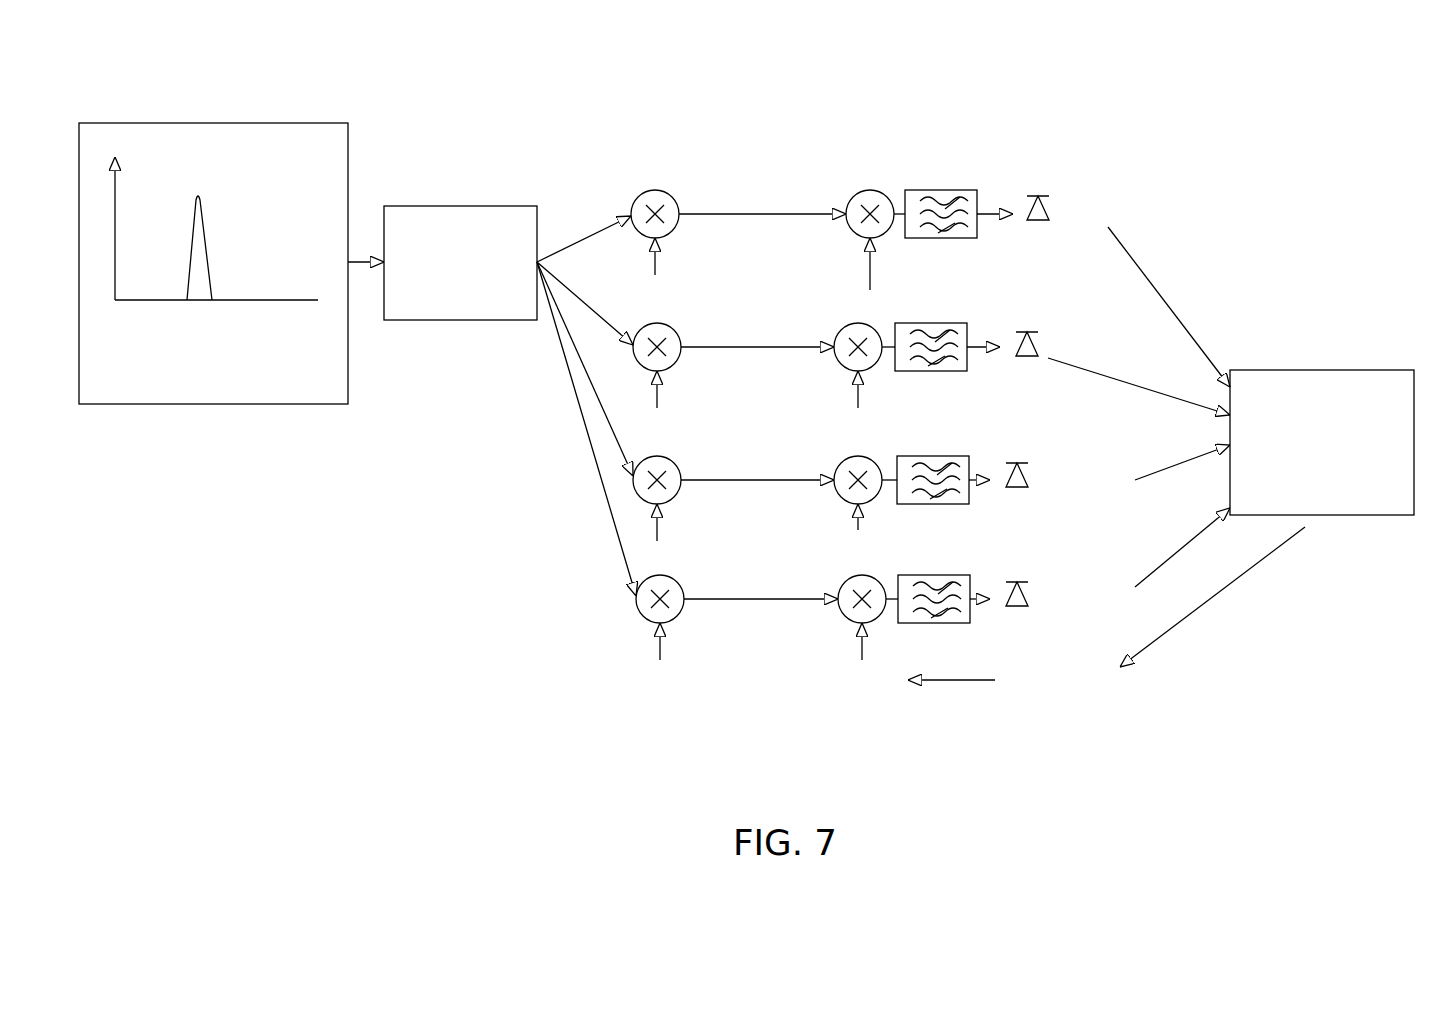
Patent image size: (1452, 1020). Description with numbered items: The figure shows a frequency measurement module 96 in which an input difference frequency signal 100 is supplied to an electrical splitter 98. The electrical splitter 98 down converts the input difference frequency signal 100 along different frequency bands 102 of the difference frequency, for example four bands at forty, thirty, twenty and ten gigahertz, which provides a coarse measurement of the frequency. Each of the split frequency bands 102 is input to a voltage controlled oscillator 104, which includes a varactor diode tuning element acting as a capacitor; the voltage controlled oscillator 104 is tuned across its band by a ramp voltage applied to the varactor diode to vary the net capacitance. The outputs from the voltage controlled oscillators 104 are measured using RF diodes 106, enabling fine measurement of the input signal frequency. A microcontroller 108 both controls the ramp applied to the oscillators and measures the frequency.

The frequency measurement module 96 is at (1318, 68).
The electrical splitter 98 is at (461, 206).
The input difference frequency signal 100 is at (195, 123).
The frequency bands 102 is at (563, 249).
The voltage controlled oscillator 104 is at (868, 262).
The RF diodes 106 is at (1040, 196).
The microcontroller 108 is at (1320, 370).